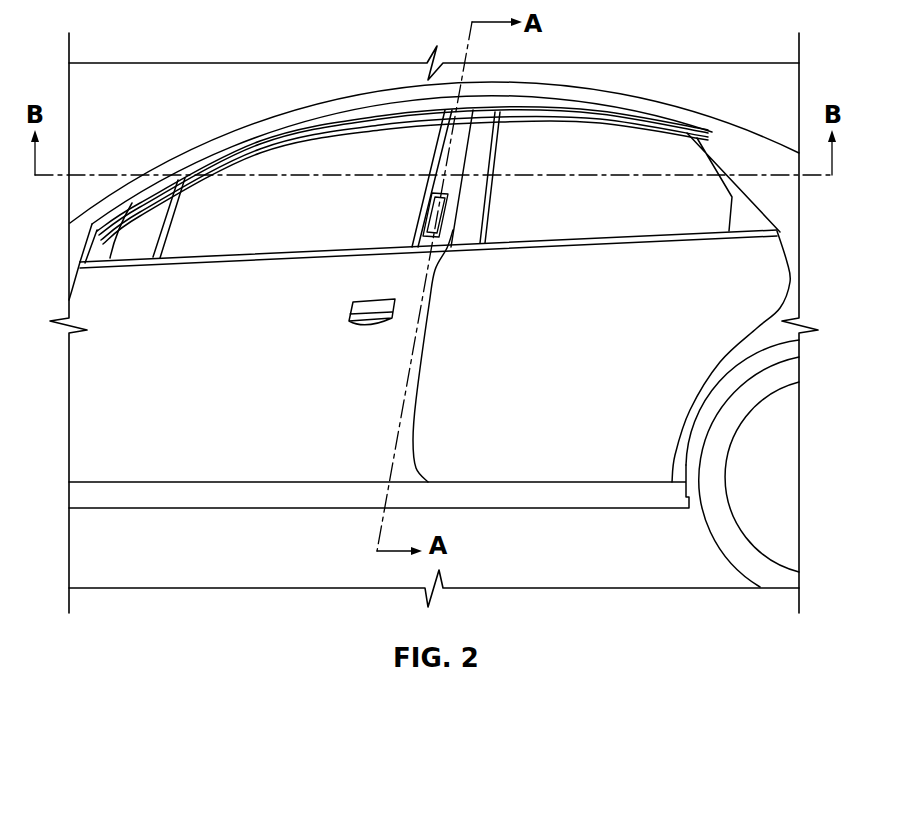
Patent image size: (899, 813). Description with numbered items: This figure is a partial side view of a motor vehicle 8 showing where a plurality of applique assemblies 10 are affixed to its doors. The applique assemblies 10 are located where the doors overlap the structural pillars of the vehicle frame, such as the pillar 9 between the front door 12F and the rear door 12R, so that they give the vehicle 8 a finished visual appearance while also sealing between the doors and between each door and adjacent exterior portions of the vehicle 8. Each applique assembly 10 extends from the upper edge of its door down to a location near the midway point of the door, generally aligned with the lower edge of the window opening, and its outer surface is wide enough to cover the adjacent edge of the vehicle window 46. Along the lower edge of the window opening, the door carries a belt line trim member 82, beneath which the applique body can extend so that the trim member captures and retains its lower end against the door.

The motor vehicle 8 is at (732, 84).
The pillar 9 is at (490, 122).
The applique assembly 10 is at (447, 154).
The vehicle window 46 is at (318, 209).
The belt line trim member 82 is at (309, 258).
The front door 12F is at (202, 461).
The rear door 12R is at (551, 461).